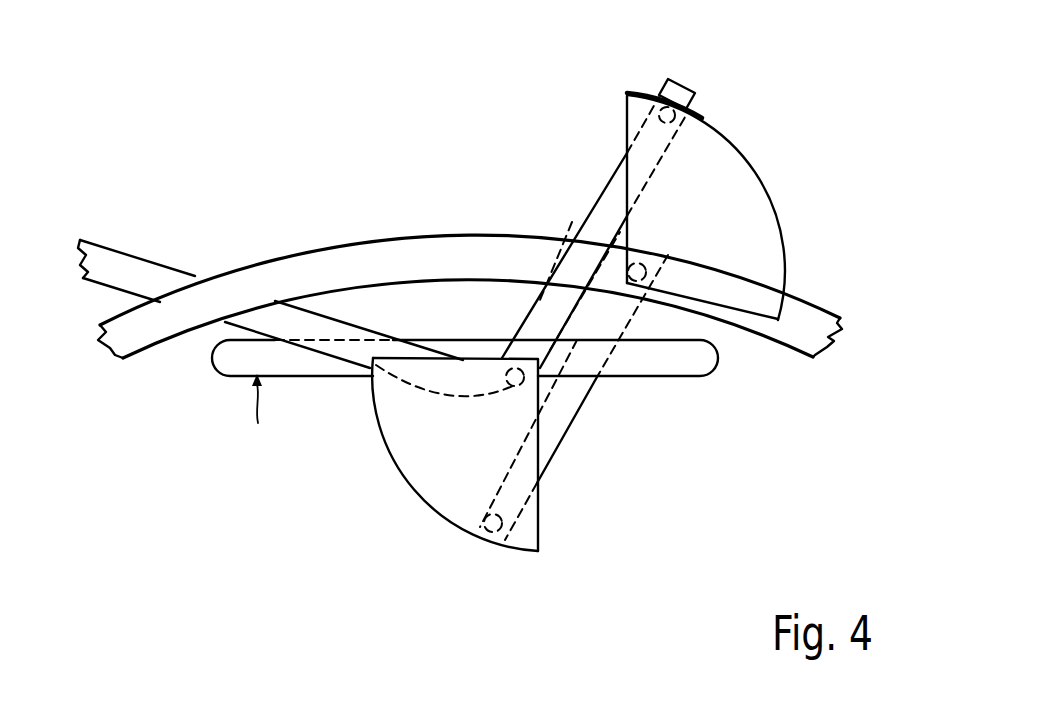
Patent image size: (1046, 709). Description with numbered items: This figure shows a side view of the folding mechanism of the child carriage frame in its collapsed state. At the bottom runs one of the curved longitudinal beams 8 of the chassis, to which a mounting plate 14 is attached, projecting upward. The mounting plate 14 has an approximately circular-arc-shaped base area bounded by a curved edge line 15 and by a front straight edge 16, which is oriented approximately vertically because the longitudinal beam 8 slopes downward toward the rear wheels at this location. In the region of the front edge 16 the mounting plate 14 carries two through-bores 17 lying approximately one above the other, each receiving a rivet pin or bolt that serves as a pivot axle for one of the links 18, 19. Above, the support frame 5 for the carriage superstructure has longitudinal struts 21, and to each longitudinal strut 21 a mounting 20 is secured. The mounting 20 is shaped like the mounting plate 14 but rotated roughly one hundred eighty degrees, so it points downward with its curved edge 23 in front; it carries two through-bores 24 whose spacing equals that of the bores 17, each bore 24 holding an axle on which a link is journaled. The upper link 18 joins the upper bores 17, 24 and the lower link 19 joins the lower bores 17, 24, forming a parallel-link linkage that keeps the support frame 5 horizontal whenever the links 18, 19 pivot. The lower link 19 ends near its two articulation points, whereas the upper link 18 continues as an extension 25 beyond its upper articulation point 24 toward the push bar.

The support frame 5 is at (259, 419).
The longitudinal beam 8 is at (160, 330).
The mounting plate 14 is at (697, 188).
The curved edge line 15 is at (768, 203).
The front straight edge 16 is at (627, 128).
The through-bore 17 is at (680, 113).
The upper link 18 is at (598, 218).
The lower link 19 is at (568, 410).
The mounting 20 is at (418, 467).
The longitudinal strut 21 is at (687, 366).
The curved edge 23 is at (410, 487).
The through-bore 24 is at (483, 517).
The extension 25 is at (135, 272).